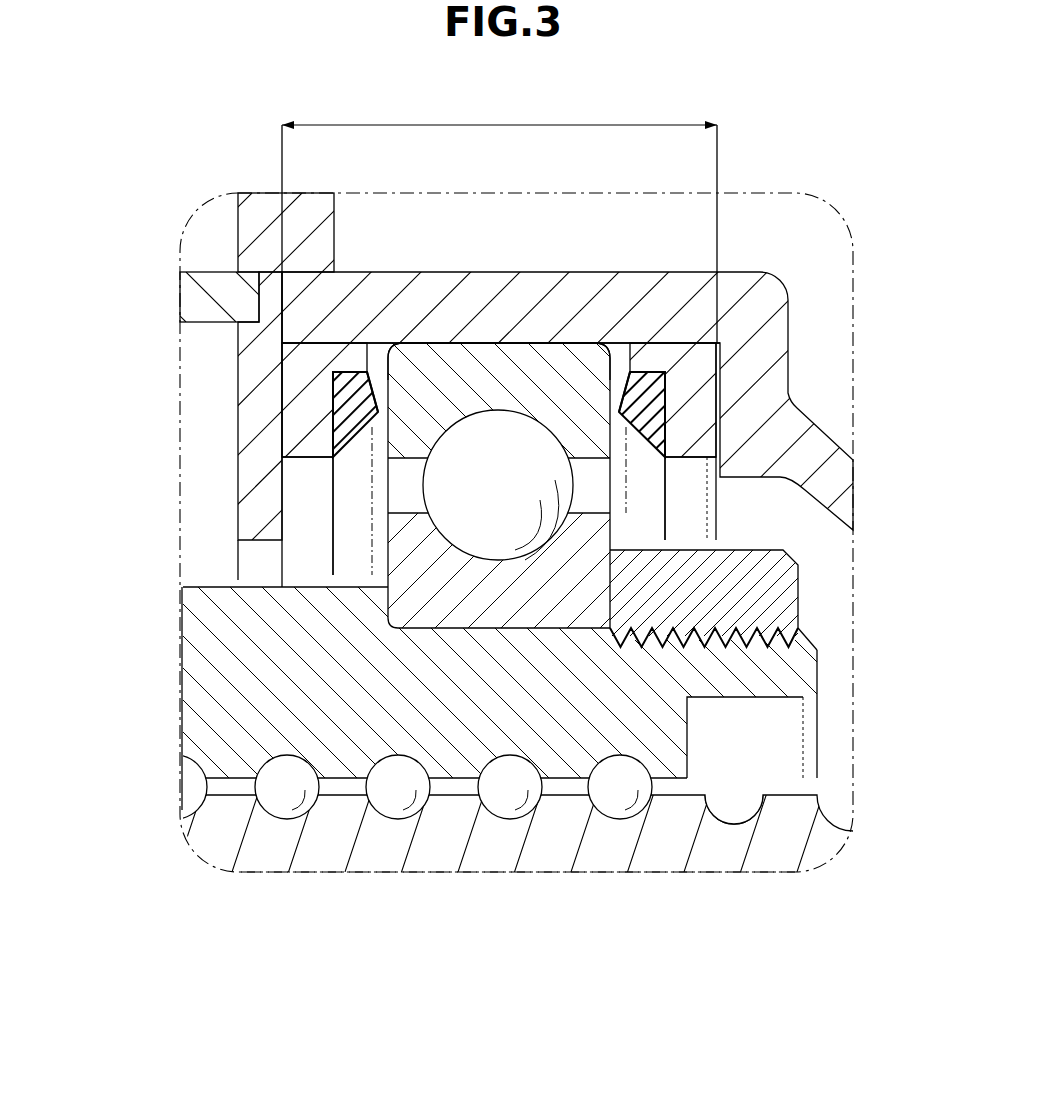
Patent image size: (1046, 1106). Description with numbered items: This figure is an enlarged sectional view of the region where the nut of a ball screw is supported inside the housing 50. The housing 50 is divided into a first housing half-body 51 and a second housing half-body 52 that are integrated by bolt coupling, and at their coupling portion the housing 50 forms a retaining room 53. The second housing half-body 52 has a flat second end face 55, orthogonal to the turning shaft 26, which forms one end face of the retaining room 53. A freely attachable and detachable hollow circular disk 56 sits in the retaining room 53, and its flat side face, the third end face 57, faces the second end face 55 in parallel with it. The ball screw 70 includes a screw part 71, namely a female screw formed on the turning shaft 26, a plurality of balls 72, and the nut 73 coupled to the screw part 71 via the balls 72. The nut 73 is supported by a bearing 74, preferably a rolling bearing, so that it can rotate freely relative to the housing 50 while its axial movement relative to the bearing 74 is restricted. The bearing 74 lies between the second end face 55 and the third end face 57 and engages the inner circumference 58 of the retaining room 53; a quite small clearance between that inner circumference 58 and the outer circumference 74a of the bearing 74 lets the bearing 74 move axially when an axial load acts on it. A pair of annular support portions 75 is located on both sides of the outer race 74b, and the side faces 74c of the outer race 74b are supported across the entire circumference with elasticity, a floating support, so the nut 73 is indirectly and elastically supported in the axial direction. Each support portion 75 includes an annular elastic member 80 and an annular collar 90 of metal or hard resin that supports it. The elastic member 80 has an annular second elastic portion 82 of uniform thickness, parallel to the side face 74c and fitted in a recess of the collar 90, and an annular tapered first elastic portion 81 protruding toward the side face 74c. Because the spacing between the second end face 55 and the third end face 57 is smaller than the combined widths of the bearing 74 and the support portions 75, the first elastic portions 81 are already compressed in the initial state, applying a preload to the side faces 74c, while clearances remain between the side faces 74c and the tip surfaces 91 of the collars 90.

The turning shaft 26 is at (443, 857).
The housing 50 is at (110, 135).
The first housing half-body 51 is at (193, 302).
The second housing half-body 52 is at (253, 221).
The retaining room 53 is at (673, 550).
The second end face 55 is at (675, 340).
The hollow circular disk 56 is at (262, 385).
The third end face 57 is at (297, 412).
The inner circumference of the retaining room 58 is at (577, 340).
The ball screw 70 is at (98, 655).
The screw part 71 is at (328, 846).
The balls 72 is at (398, 770).
The nut 73 is at (262, 668).
The bearing 74 is at (500, 387).
The outer circumference of the bearing 74a is at (463, 340).
The outer race 74b is at (533, 340).
The side faces of the outer race 74c is at (373, 374).
The annular support portions 75 is at (98, 527).
The elastic member 80 is at (350, 447).
The first elastic portion 81 is at (383, 427).
The second elastic portion 82 is at (362, 440).
The collar 90 is at (305, 460).
The tip surface of the collar 91 is at (378, 340).